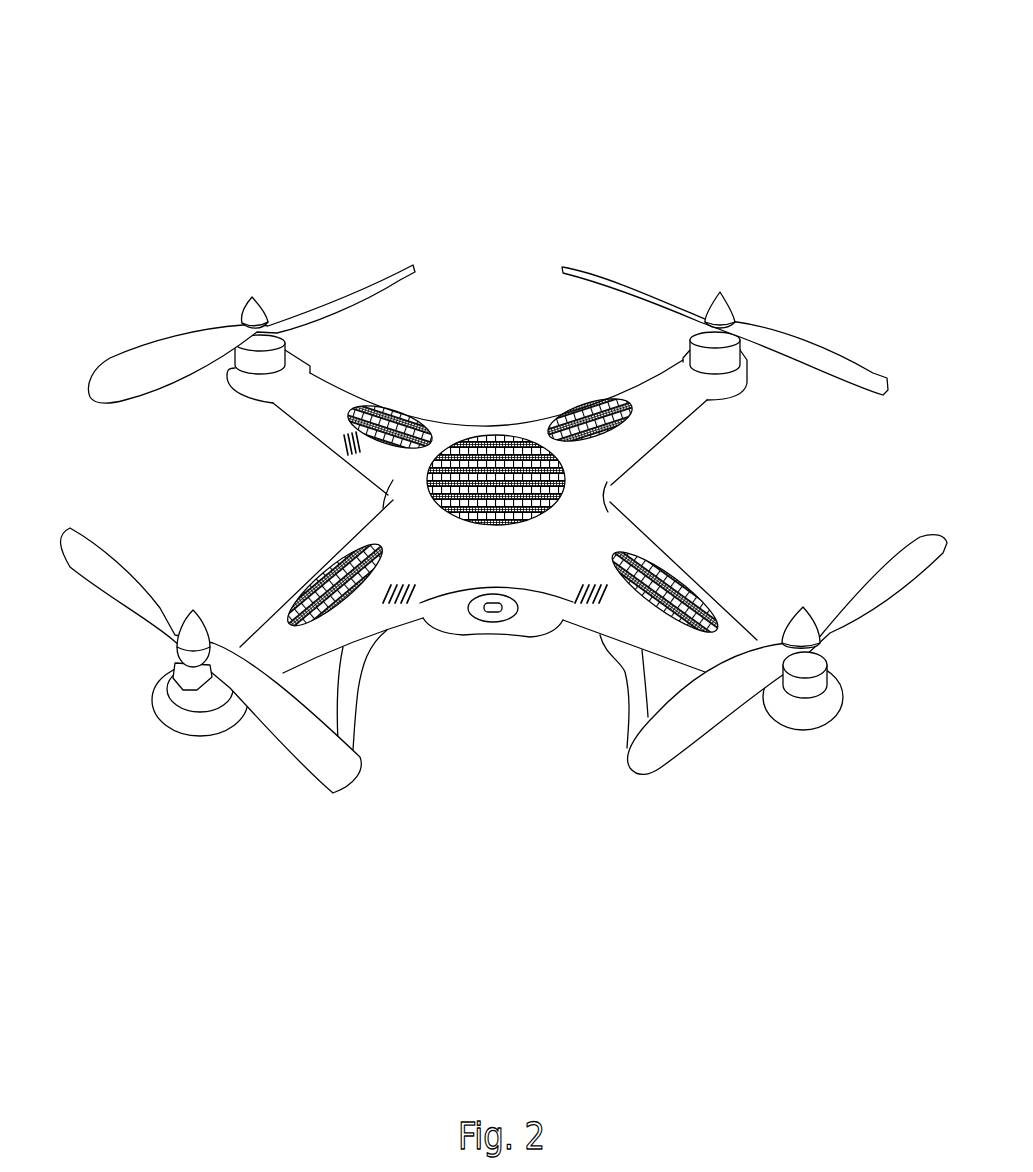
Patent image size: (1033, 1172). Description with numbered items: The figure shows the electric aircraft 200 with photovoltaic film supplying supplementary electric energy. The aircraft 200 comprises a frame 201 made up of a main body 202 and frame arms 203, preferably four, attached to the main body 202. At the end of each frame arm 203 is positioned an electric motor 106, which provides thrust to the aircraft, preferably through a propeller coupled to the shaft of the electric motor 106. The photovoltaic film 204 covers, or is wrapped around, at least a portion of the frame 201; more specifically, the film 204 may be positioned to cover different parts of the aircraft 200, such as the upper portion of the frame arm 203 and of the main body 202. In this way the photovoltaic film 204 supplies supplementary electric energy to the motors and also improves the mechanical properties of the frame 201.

The electric aircraft 200 is at (140, 92).
The frame 201 is at (610, 493).
The main body 202 is at (447, 427).
The frame arm 203 is at (663, 647).
The photovoltaic film 204 is at (572, 408).
The electric motor 106 is at (810, 697).